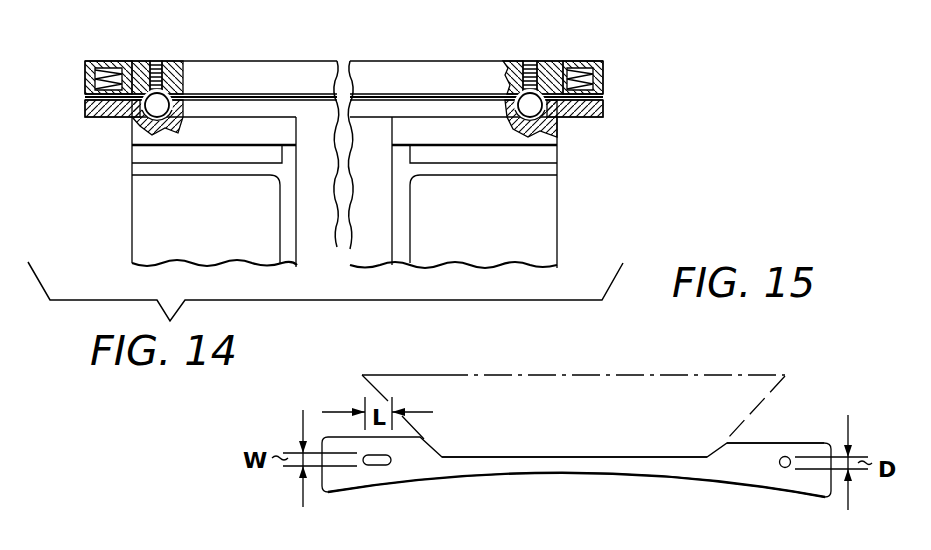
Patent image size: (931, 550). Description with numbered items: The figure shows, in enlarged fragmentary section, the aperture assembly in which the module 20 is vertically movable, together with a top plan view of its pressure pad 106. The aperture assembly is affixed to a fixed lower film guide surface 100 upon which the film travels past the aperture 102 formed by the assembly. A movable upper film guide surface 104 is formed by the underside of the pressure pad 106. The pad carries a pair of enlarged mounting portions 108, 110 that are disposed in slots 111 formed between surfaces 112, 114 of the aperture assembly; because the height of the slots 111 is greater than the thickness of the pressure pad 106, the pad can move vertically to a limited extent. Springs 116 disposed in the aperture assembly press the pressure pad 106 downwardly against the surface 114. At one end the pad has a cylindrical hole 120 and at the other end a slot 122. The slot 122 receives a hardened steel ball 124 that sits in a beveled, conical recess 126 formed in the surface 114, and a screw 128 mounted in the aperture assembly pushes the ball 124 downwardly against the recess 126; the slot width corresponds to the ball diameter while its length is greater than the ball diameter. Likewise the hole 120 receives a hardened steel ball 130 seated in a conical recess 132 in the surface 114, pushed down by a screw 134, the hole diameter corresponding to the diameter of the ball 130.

In FIG. 14, the module 20 is at (176, 44).
In FIG. 15, the module 20 is at (732, 393).
In FIG. 14, the fixed lower film guide surface 100 is at (696, 0).
In FIG. 14, the aperture 102 is at (641, 0).
In FIG. 14, the movable upper film guide surface 104 is at (252, 118).
In FIG. 14, the pressure pad 106 is at (93, 118).
In FIG. 15, the pressure pad 106 is at (572, 465).
In FIG. 15, the enlarged mounting portion 108 is at (763, 451).
In FIG. 15, the enlarged mounting portion 110 is at (413, 467).
In FIG. 14, the slot 111 is at (218, 100).
In FIG. 14, the surface 112 is at (252, 99).
In FIG. 14, the surface 114 is at (277, 117).
In FIG. 14, the spring 116 is at (107, 62).
In FIG. 15, the cylindrical hole 120 is at (784, 470).
In FIG. 14, the slot 122 is at (131, 143).
In FIG. 15, the slot 122 is at (373, 468).
In FIG. 14, the hardened steel ball 124 is at (181, 97).
In FIG. 14, the beveled recess 126 is at (171, 119).
In FIG. 14, the screw 128 is at (159, 61).
In FIG. 14, the hardened steel ball 130 is at (560, 122).
In FIG. 14, the beveled recess 132 is at (545, 135).
In FIG. 14, the screw 134 is at (529, 61).